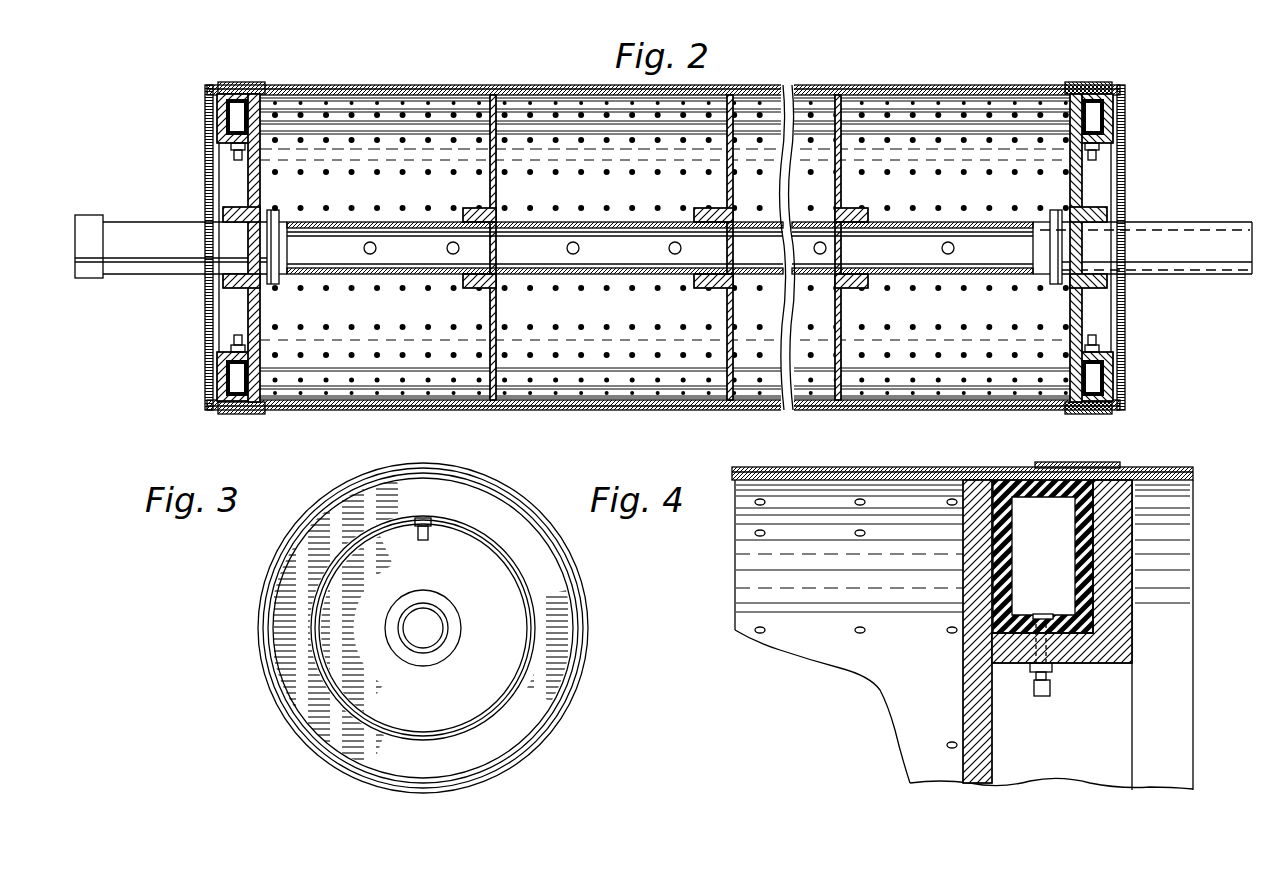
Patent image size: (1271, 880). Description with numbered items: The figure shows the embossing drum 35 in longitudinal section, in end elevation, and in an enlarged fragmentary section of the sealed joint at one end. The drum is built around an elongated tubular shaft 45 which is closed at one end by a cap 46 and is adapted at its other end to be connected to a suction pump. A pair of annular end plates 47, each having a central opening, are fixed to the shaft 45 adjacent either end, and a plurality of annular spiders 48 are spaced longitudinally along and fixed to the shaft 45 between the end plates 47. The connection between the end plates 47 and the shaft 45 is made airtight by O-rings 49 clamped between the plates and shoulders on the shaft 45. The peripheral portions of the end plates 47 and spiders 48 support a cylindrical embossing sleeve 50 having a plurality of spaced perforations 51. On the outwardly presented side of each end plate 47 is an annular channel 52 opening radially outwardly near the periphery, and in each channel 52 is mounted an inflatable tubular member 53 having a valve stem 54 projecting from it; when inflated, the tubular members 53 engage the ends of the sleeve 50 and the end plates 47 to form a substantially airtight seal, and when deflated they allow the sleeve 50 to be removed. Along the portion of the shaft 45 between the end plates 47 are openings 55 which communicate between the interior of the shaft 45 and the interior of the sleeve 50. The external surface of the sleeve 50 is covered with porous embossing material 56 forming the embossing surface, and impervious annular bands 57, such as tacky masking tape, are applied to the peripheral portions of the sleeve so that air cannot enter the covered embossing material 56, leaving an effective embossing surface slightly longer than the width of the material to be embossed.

In FIG. 2, the embossing drum 35 is at (190, 365).
In FIG. 2, the tubular shaft 45 is at (188, 262).
In FIG. 3, the tubular shaft 45 is at (400, 620).
In FIG. 2, the cap 46 is at (100, 278).
In FIG. 2, the end plates 47 is at (250, 318).
In FIG. 3, the end plates 47 is at (280, 638).
In FIG. 4, the end plates 47 is at (968, 712).
In FIG. 2, the spiders 48 is at (478, 290).
In FIG. 2, the O-rings 49 is at (278, 212).
In FIG. 2, the embossing sleeve 50 is at (780, 88).
In FIG. 3, the embossing sleeve 50 is at (278, 685).
In FIG. 4, the embossing sleeve 50 is at (905, 470).
In FIG. 2, the perforations 51 is at (540, 98).
In FIG. 4, the perforations 51 is at (858, 504).
In FIG. 4, the annular channel 52 is at (1095, 627).
In FIG. 2, the inflatable tubular member 53 is at (237, 117).
In FIG. 4, the inflatable tubular member 53 is at (1068, 551).
In FIG. 2, the valve stem 54 is at (235, 150).
In FIG. 3, the valve stem 54 is at (416, 536).
In FIG. 4, the valve stem 54 is at (1047, 675).
In FIG. 2, the openings 55 is at (664, 248).
In FIG. 2, the porous embossing material 56 is at (945, 86).
In FIG. 4, the porous embossing material 56 is at (800, 470).
In FIG. 2, the impervious annular bands 57 is at (240, 82).
In FIG. 3, the impervious annular bands 57 is at (265, 585).
In FIG. 4, the impervious annular bands 57 is at (1100, 464).